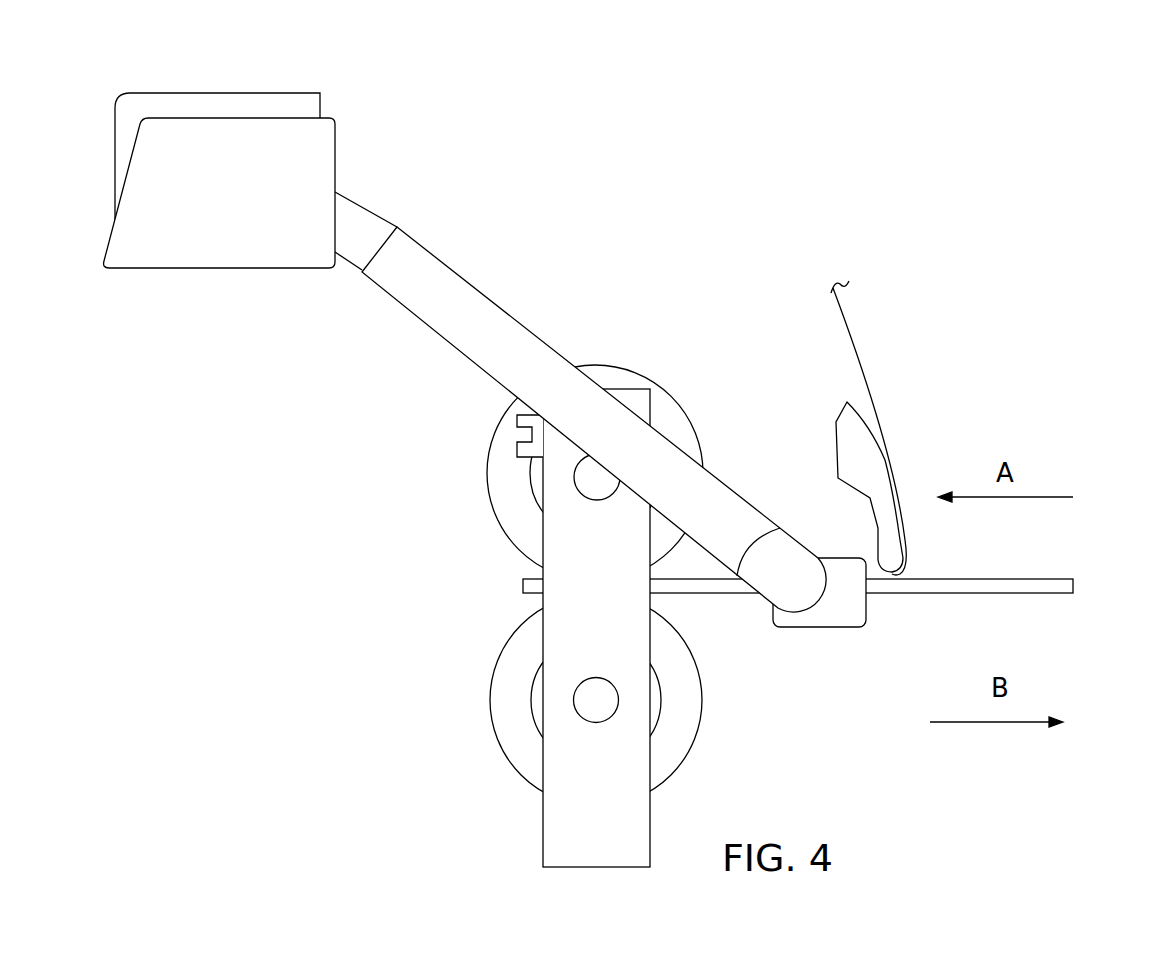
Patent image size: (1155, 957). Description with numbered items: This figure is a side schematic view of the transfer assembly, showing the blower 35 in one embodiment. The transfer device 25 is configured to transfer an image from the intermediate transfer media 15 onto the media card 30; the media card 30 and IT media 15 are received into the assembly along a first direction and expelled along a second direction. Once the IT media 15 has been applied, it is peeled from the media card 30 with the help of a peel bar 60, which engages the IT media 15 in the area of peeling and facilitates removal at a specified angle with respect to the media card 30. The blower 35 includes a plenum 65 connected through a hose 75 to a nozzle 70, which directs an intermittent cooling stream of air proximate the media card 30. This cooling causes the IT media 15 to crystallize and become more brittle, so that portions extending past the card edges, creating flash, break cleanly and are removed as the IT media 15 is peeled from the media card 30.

The blower 35 is at (365, 98).
The plenum 65 is at (185, 243).
The hose 75 is at (478, 288).
The transfer device 25 is at (600, 367).
The peel bar 60 is at (848, 447).
The intermediate transfer media 15 is at (873, 384).
The media card 30 is at (1055, 585).
The nozzle 70 is at (837, 628).